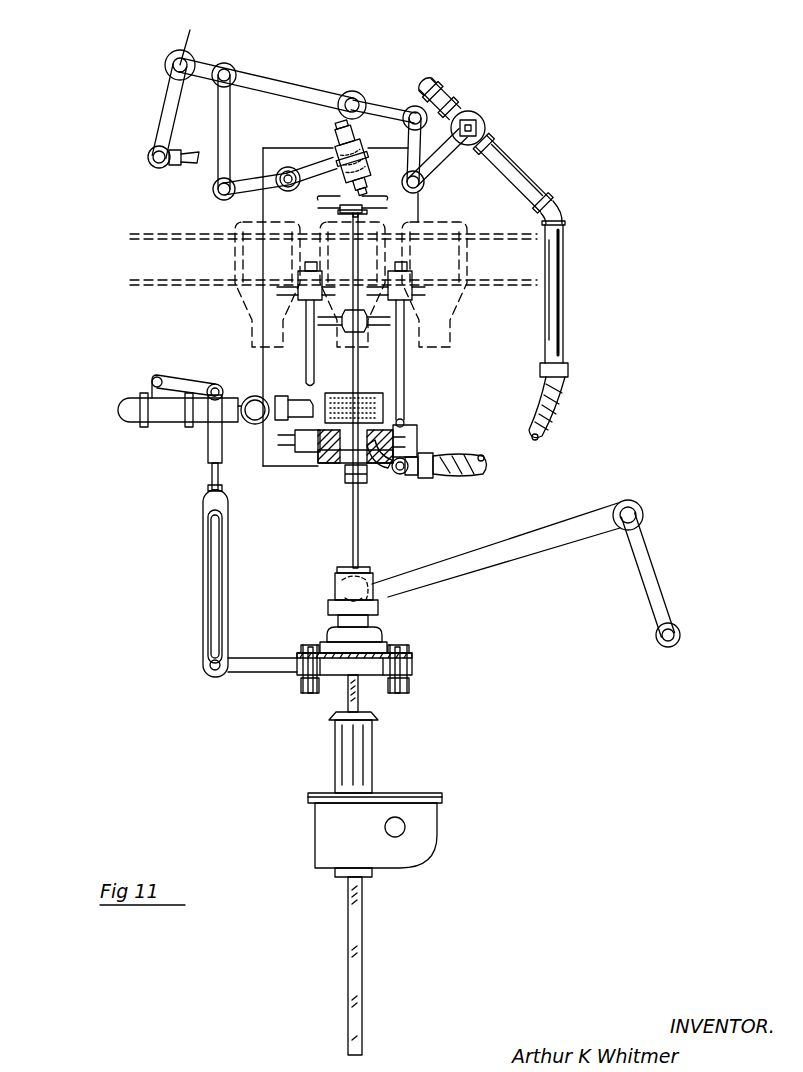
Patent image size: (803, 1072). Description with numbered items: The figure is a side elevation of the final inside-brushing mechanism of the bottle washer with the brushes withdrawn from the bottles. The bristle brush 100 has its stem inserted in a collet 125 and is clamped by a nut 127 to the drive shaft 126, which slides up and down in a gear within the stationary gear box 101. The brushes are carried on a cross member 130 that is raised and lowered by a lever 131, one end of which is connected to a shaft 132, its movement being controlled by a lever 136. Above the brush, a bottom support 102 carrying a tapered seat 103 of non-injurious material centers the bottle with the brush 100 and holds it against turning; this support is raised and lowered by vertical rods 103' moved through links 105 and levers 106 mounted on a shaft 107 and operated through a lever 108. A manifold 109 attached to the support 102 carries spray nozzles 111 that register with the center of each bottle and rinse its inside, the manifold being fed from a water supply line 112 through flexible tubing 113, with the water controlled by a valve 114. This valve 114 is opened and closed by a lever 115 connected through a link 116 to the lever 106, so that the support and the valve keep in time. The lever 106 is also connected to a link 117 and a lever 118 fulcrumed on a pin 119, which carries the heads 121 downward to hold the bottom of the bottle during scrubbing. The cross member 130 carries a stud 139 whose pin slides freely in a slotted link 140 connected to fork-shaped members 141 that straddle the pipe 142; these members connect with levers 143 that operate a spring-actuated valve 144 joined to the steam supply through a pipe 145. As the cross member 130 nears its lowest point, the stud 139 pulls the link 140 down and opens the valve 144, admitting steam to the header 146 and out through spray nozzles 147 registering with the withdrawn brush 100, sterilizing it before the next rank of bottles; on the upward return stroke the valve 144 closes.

The brush 100 is at (333, 393).
The gear box 101 is at (420, 832).
The bottom support 102 is at (332, 455).
The tapered seat 103 is at (426, 359).
The vertical rods 103' is at (400, 389).
The links 105 is at (342, 118).
The levers 106 is at (263, 88).
The shaft 107 is at (193, 46).
The lever 108 is at (172, 100).
The manifold 109 is at (405, 475).
The spray nozzles 111 is at (383, 465).
The water supply line 112 is at (555, 313).
The flexible tubing 113 is at (486, 470).
The valve 114 is at (482, 130).
The lever 115 is at (445, 153).
The link 116 is at (402, 133).
The link 117 is at (220, 167).
The lever 118 is at (257, 187).
The pin 119 is at (285, 188).
The heads 121 is at (370, 173).
The collet 125 is at (363, 563).
The drive shaft 126 is at (357, 703).
The nut 127 is at (337, 585).
The cross member 130 is at (413, 660).
The lever 131 is at (545, 541).
The shaft 132 is at (630, 515).
The lever 136 is at (660, 595).
The stud 139 is at (258, 667).
The slotted link 140 is at (202, 603).
The fork-shaped members 141 is at (210, 440).
The pipe 142 is at (233, 402).
The levers 143 is at (172, 380).
The spring-actuated valve 144 is at (140, 397).
The pipe 145 is at (127, 410).
The header 146 is at (257, 416).
The spray nozzles 147 is at (284, 394).